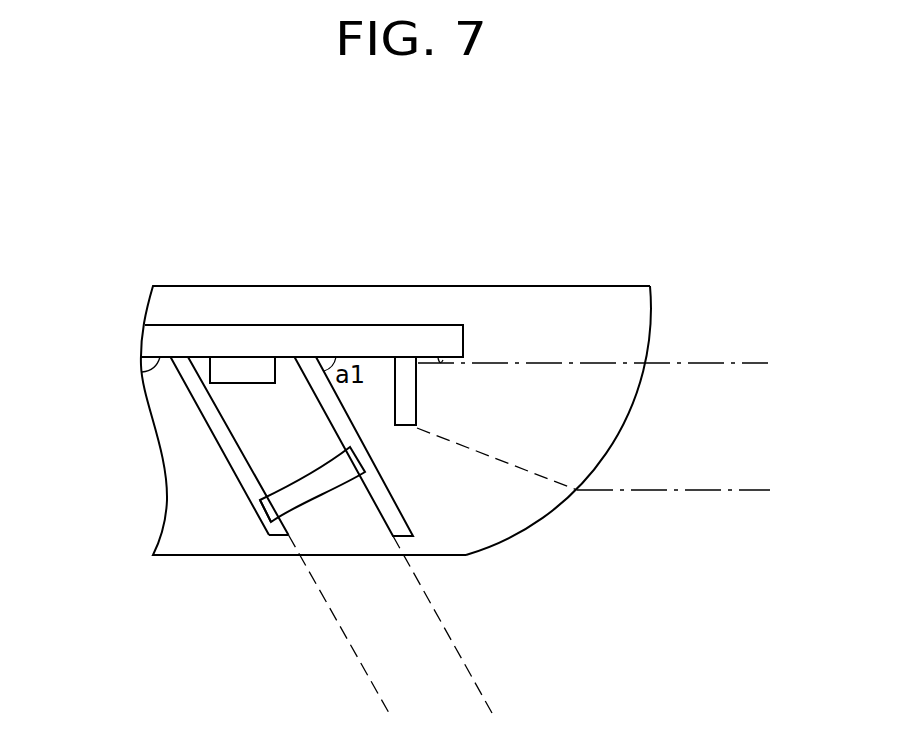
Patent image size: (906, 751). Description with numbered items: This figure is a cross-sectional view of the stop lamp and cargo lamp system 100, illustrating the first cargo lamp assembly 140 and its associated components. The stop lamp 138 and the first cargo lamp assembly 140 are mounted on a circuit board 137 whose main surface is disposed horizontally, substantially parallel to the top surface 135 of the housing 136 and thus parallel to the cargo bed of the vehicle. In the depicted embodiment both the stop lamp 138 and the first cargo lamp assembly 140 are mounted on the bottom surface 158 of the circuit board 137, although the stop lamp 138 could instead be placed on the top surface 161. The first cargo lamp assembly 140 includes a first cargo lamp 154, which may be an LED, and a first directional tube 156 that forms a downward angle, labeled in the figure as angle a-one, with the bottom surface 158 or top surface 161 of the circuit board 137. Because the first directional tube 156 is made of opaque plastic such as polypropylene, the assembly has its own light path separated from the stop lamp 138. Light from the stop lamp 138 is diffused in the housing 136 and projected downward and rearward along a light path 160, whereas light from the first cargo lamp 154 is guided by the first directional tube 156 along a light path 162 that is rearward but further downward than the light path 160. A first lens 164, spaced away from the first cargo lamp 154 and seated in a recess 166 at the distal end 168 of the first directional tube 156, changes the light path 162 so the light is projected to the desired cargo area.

The stop lamp and cargo lamp system 100 is at (586, 227).
The top surface 135 is at (494, 286).
The housing 136 is at (606, 418).
The circuit board 137 is at (320, 337).
The stop lamp 138 is at (405, 425).
The first cargo lamp assembly 140 is at (233, 470).
The first cargo lamp 154 is at (240, 368).
The first directional tube 156 is at (213, 423).
The bottom surface 158 is at (140, 364).
The light path 160 is at (713, 363).
The top surface 161 is at (412, 325).
The light path 162 is at (478, 680).
The first lens 164 is at (320, 480).
The recess 166 is at (258, 522).
The distal end 168 is at (277, 537).